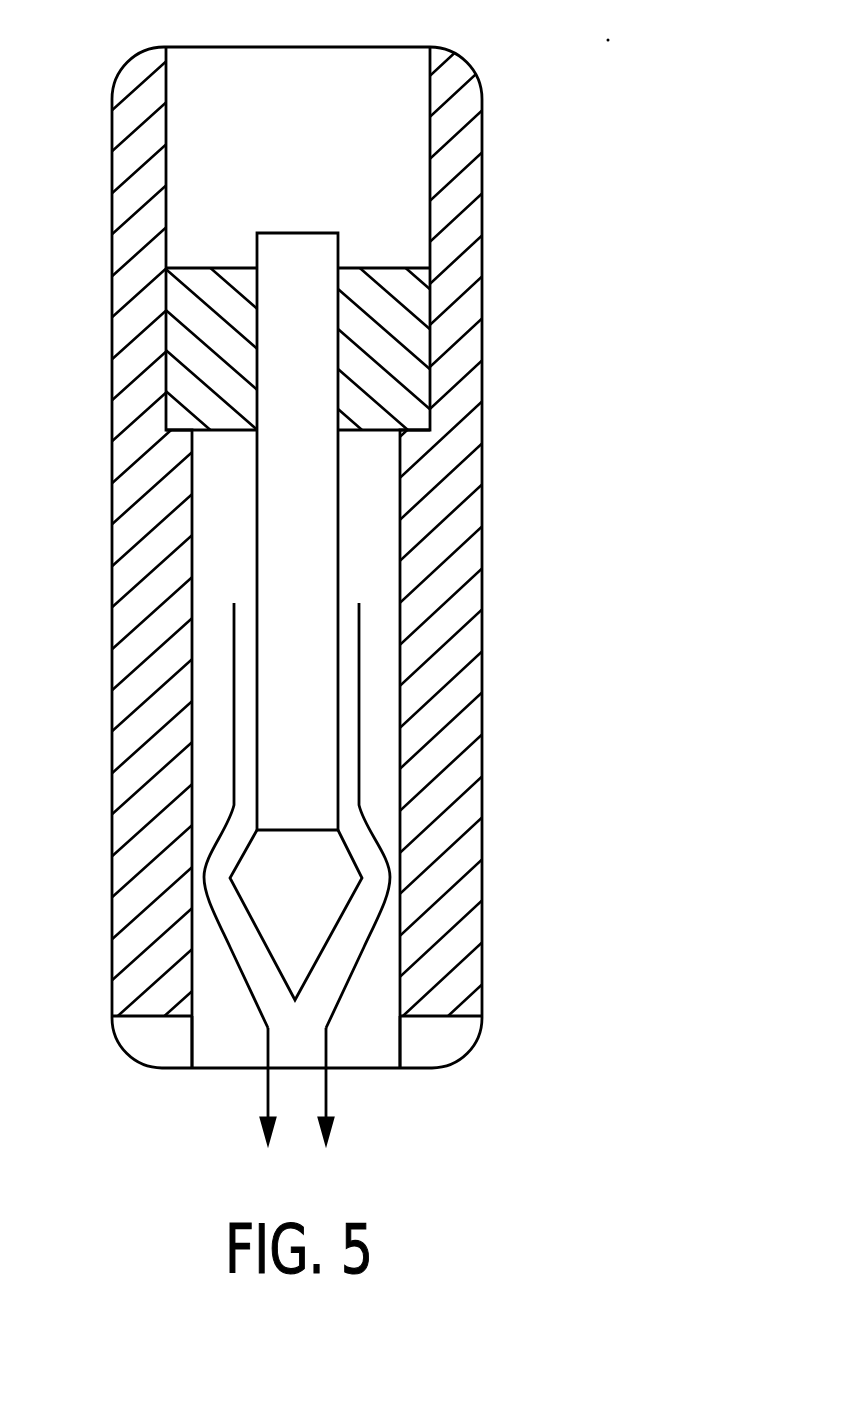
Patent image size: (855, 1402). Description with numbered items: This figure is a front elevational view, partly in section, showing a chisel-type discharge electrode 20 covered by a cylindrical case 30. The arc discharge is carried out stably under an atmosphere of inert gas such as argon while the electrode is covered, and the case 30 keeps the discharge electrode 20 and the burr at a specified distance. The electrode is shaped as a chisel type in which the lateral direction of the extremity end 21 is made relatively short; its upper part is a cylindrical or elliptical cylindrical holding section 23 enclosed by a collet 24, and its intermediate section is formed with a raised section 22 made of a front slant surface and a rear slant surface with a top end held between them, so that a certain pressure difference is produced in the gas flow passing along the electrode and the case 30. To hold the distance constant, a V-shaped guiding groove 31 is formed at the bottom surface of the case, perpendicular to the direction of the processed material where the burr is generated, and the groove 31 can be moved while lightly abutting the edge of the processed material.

The discharge electrode 20 is at (678, 530).
The extremity end 21 is at (305, 963).
The raised section 22 is at (363, 880).
The holding section 23 is at (318, 590).
The collet 24 is at (417, 342).
The case 30 is at (122, 617).
The guiding groove 31 is at (432, 1068).